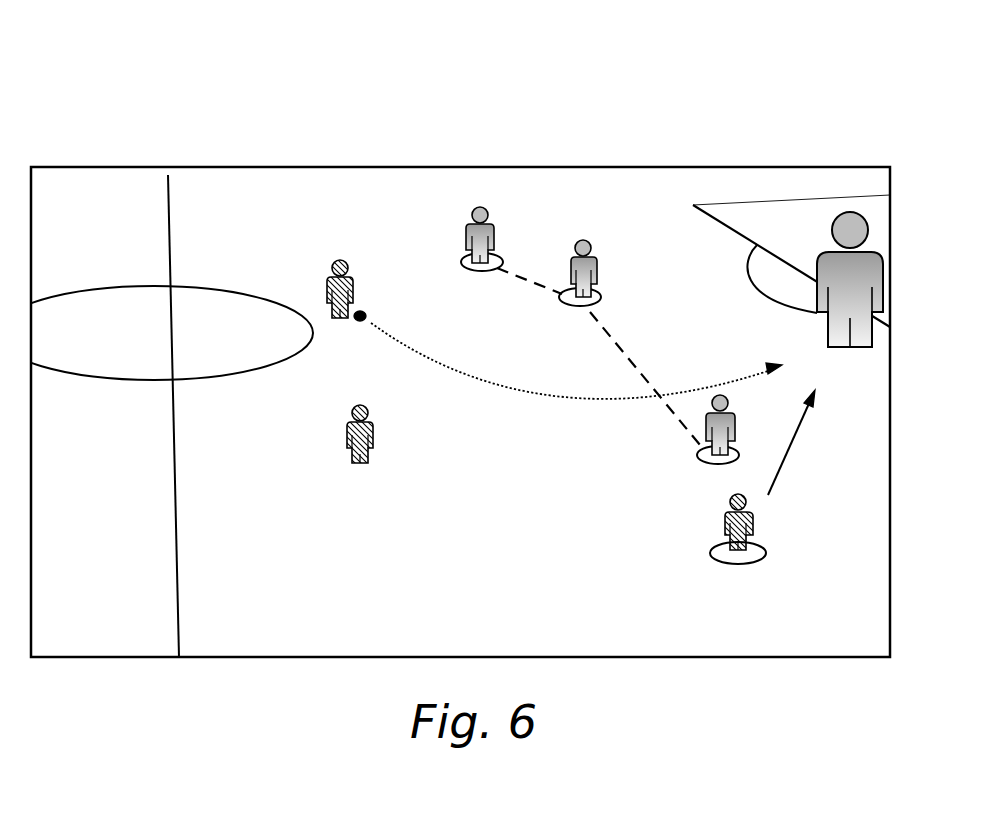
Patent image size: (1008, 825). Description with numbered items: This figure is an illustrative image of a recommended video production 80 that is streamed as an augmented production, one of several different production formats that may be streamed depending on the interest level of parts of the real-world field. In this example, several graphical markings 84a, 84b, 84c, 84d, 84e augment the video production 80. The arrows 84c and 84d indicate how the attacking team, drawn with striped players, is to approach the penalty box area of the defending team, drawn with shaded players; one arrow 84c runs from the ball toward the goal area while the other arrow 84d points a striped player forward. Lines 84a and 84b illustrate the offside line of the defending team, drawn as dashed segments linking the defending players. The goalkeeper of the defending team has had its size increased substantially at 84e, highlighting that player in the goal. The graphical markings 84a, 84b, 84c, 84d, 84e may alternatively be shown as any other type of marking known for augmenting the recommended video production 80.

The recommended video production 80 is at (332, 188).
The graphical marking 84a is at (538, 287).
The graphical marking 84b is at (630, 358).
The graphical marking 84c is at (538, 393).
The graphical marking 84d is at (803, 418).
The graphical marking 84e is at (853, 212).